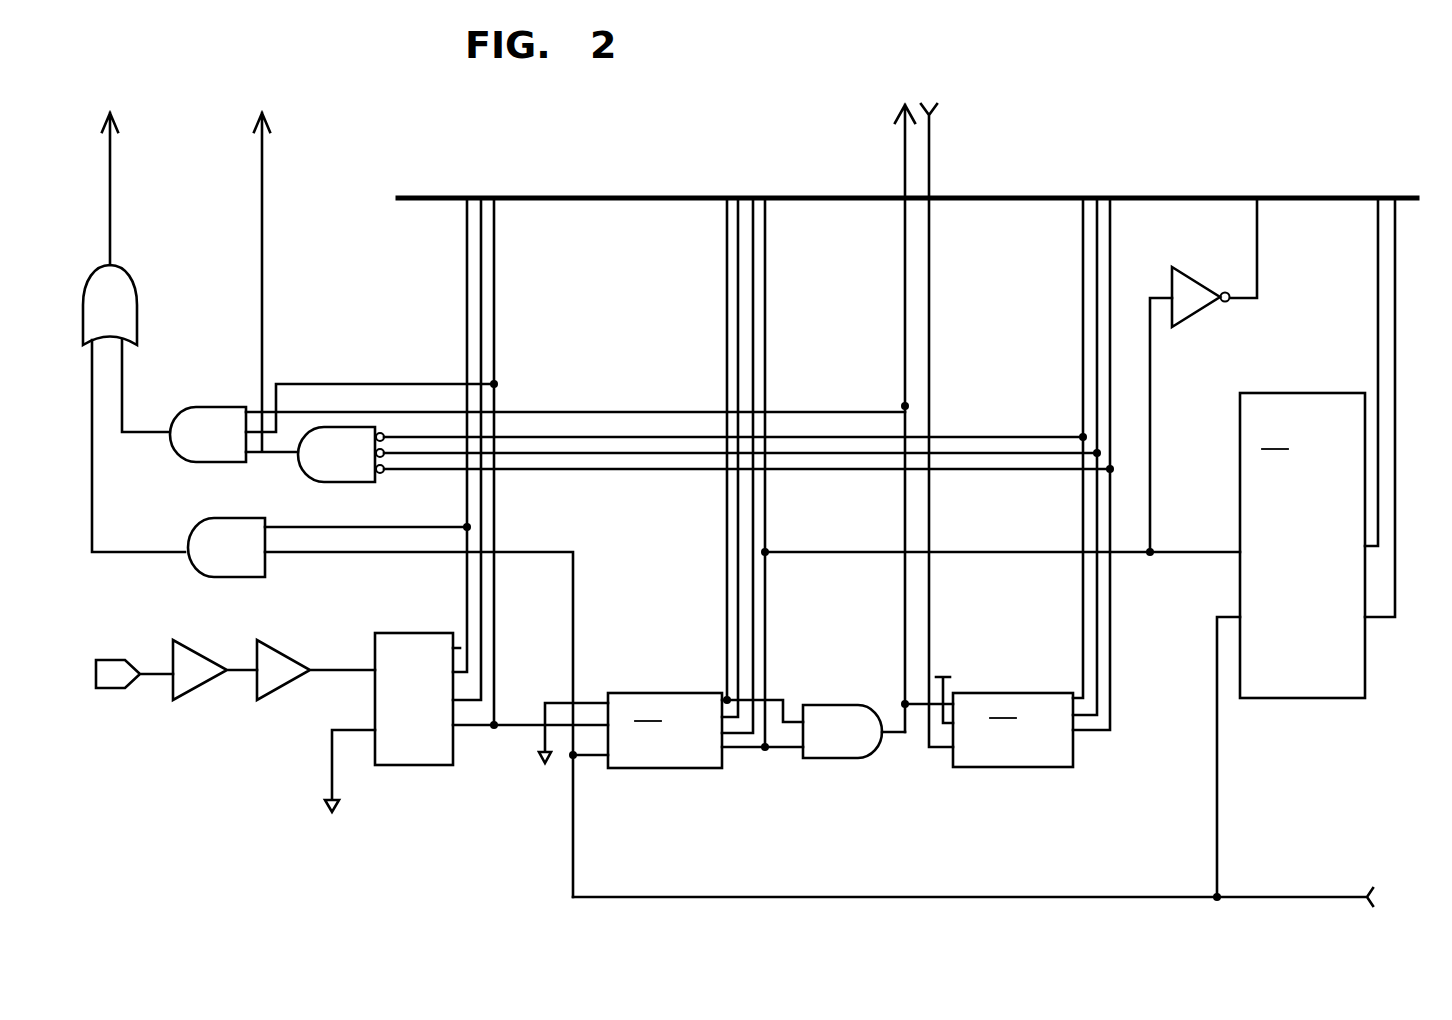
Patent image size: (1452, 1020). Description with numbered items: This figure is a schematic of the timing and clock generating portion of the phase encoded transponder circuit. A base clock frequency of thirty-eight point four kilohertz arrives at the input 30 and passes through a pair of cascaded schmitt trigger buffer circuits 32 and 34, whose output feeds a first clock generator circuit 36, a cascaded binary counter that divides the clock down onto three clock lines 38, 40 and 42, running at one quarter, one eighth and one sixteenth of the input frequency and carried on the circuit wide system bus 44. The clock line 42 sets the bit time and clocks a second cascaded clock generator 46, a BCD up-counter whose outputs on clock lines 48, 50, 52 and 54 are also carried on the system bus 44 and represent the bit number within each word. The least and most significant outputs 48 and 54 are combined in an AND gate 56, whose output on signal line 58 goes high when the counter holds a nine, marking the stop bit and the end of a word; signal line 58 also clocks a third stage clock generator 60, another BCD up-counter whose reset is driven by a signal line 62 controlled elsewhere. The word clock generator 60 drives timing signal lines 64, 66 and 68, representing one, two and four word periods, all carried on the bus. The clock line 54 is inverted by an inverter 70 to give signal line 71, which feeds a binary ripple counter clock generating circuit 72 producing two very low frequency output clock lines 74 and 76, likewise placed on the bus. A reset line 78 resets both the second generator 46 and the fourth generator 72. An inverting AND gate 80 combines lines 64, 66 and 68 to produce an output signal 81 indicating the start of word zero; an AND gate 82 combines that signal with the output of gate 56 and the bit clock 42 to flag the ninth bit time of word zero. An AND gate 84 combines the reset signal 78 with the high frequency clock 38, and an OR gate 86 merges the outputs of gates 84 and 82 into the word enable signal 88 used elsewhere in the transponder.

The input 30 is at (122, 648).
The schmitt trigger buffer circuit 32 is at (200, 648).
The schmitt trigger buffer circuit 34 is at (278, 655).
The first clock generator circuit 36 is at (448, 767).
The clock line 38 is at (463, 236).
The clock line 40 is at (477, 285).
The clock line 42 is at (490, 327).
The system bus 44 is at (1148, 196).
The second cascaded clock generator 46 is at (630, 731).
The clock line 48 is at (722, 234).
The clock line 50 is at (735, 303).
The clock line 52 is at (750, 348).
The clock line 54 is at (762, 380).
The AND gate 56 is at (820, 743).
The signal line 58 is at (898, 140).
The third stage clock generator 60 is at (1004, 722).
The signal line 62 is at (937, 142).
The timing signal line 64 is at (1080, 238).
The timing signal line 66 is at (1093, 305).
The timing signal line 68 is at (1105, 356).
The inverter 70 is at (1200, 323).
The signal line 71 is at (1250, 243).
The clock generating circuit 72 is at (1289, 647).
The output clock line 74 is at (1372, 230).
The output clock line 76 is at (1393, 279).
The reset line 78 is at (1333, 892).
The inverting AND gate 80 is at (324, 466).
The output signal 81 is at (273, 150).
The AND gate 82 is at (197, 443).
The AND gate 84 is at (213, 558).
The OR gate 86 is at (132, 275).
The word enable signal 88 is at (118, 147).